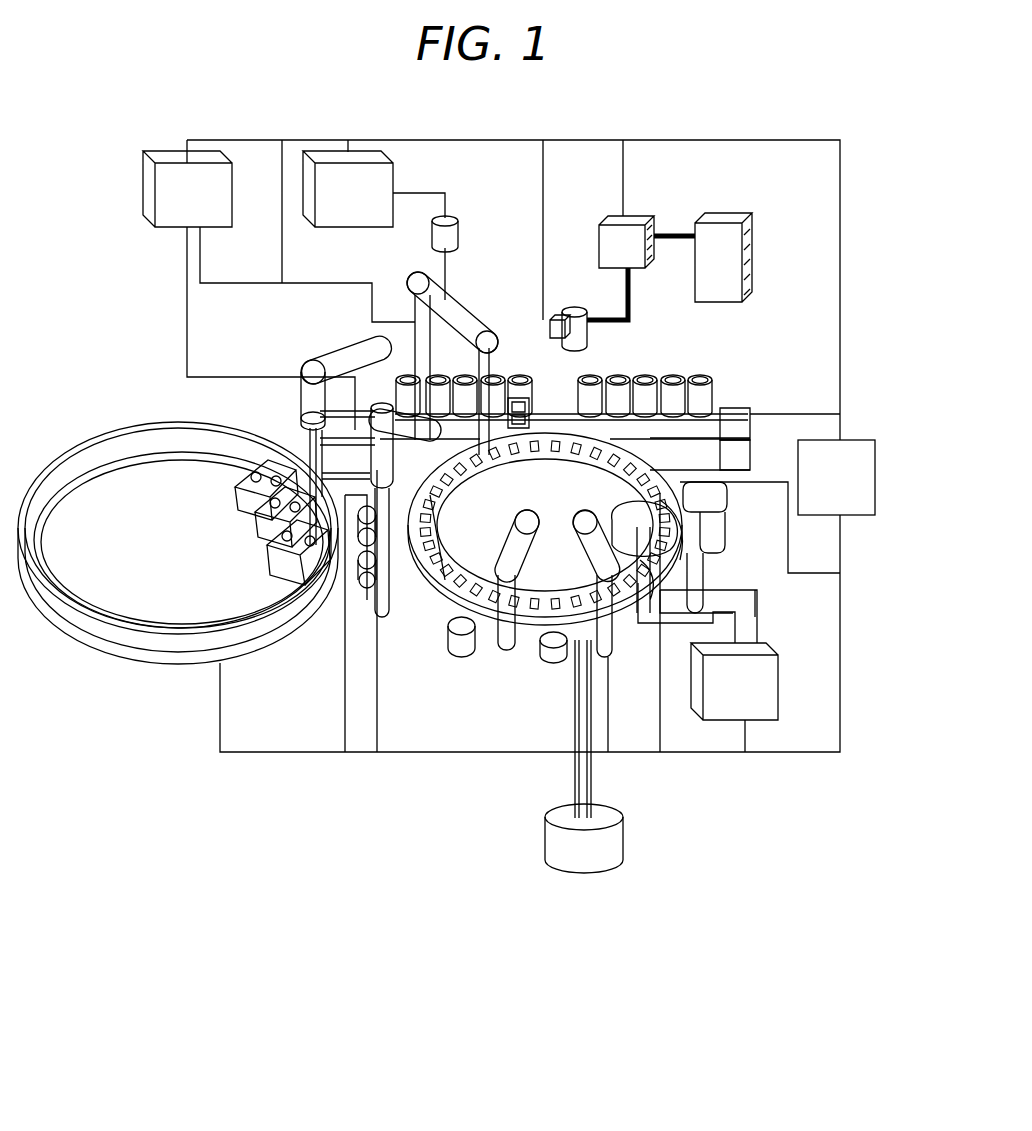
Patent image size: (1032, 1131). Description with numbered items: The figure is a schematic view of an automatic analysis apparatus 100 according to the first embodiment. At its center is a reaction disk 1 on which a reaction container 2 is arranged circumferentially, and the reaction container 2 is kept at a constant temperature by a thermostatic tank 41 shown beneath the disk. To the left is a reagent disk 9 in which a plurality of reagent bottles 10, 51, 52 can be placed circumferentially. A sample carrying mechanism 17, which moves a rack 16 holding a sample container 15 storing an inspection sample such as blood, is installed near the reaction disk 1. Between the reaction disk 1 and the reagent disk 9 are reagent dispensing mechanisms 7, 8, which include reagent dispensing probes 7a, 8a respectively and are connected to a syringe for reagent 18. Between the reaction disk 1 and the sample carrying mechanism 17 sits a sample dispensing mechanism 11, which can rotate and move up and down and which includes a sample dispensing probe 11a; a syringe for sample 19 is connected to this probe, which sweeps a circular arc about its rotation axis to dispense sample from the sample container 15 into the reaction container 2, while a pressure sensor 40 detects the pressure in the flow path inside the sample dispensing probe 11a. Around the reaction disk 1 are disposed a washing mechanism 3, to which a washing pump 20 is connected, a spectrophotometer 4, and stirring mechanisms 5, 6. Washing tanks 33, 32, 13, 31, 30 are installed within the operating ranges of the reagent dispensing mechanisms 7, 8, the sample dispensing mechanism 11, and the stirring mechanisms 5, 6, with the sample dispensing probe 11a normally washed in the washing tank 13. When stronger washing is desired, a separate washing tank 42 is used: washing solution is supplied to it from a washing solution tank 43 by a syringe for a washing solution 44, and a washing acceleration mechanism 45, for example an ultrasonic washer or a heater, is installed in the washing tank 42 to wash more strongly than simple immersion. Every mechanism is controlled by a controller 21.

The automatic analysis apparatus 100 is at (235, 807).
The reaction disk 1 is at (410, 515).
The reaction container 2 is at (455, 578).
The washing mechanism 3 is at (700, 552).
The spectrophotometer 4 is at (730, 503).
The stirring mechanism 5 is at (506, 655).
The stirring mechanism 6 is at (607, 647).
The reagent dispensing mechanism 7 is at (373, 582).
The reagent dispensing probe 7a is at (423, 465).
The reagent dispensing mechanism 8 is at (305, 368).
The reagent dispensing probe 8a is at (310, 430).
The reagent disk 9 is at (150, 425).
The reagent bottle 10 is at (268, 574).
The sample dispensing mechanism 11 is at (418, 283).
The sample dispensing probe 11a is at (486, 335).
The washing tank 13 is at (510, 395).
The sample container 15 is at (722, 388).
The rack 16 is at (705, 428).
The sample carrying mechanism 17 is at (705, 458).
The syringe for reagent 18 is at (190, 186).
The syringe for sample 19 is at (308, 200).
The washing pump 20 is at (757, 700).
The controller 21 is at (855, 508).
The washing tank 30 is at (551, 663).
The washing tank 31 is at (463, 655).
The washing tank 32 is at (360, 568).
The washing tank 33 is at (372, 585).
The pressure sensor 40 is at (452, 238).
The thermostatic tank 41 is at (585, 862).
The washing tank 42 is at (577, 330).
The washing solution tank 43 is at (735, 250).
The syringe for a washing solution 44 is at (630, 217).
The washing acceleration mechanism 45 is at (558, 338).
The reagent bottle 51 is at (237, 500).
The reagent bottle 52 is at (267, 528).